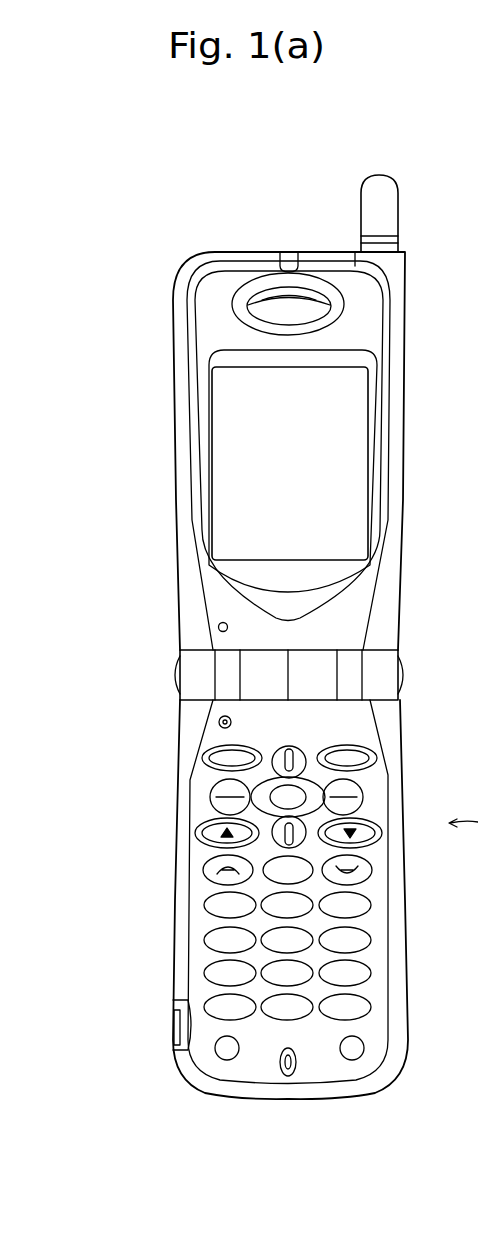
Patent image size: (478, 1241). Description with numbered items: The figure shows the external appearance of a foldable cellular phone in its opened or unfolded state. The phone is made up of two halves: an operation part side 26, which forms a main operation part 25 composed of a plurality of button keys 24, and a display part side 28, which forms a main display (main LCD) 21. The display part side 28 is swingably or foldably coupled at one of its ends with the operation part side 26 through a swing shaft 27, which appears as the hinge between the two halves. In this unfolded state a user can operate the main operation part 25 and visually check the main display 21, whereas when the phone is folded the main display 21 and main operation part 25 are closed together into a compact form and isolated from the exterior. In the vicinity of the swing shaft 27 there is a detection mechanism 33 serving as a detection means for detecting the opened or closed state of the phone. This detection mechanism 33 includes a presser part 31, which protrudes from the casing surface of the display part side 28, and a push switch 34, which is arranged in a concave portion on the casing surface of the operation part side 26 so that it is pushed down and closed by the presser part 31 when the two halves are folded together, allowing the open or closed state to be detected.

The main display (main LCD) 21 is at (223, 400).
The button keys 24 is at (371, 900).
The main operation part 25 is at (198, 950).
The operation part side 26 is at (178, 758).
The swing shaft 27 is at (405, 676).
The display part side 28 is at (173, 452).
The presser part 31 is at (218, 627).
The detection mechanism 33 is at (116, 703).
The push switch 34 is at (219, 722).